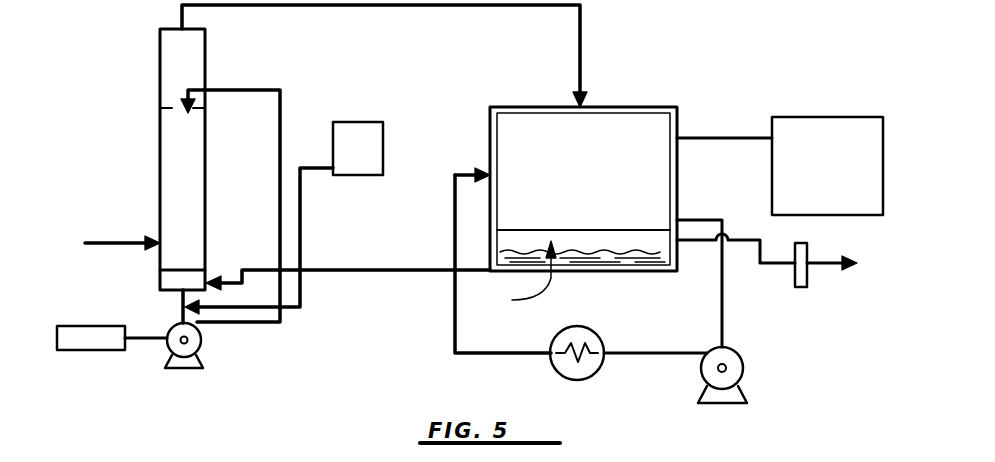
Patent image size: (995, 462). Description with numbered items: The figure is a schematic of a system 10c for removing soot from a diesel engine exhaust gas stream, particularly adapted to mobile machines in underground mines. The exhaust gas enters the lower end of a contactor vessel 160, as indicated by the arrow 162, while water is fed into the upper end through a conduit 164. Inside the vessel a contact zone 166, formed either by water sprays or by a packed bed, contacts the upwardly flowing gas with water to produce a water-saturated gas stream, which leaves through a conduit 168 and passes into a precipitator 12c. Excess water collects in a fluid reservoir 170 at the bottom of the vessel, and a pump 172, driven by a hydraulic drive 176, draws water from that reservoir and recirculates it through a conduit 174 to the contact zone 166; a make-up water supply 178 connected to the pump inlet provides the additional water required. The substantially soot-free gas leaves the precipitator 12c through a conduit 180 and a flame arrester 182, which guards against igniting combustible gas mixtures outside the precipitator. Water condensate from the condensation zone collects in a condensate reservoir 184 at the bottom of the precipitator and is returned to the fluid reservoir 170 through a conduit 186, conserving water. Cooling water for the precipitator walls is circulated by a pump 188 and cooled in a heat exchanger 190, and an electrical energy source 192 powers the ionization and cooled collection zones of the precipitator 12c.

The system 10c is at (586, 169).
The precipitator 12c is at (532, 106).
The contactor vessel 160 is at (160, 125).
The arrow 162 is at (123, 242).
The conduit 164 is at (282, 97).
The contact zone 166 is at (175, 160).
The conduit 168 is at (330, 8).
The fluid reservoir 170 is at (175, 284).
The pump 172 is at (200, 355).
The conduit 174 is at (182, 306).
The hydraulic drive 176 is at (73, 350).
The make-up water supply 178 is at (363, 122).
The conduit 180 is at (740, 244).
The flame arrester 182 is at (807, 280).
The condensate reservoir 184 is at (568, 278).
The conduit 186 is at (353, 268).
The pump 188 is at (745, 370).
The heat exchanger 190 is at (595, 373).
The electrical energy source 192 is at (838, 117).